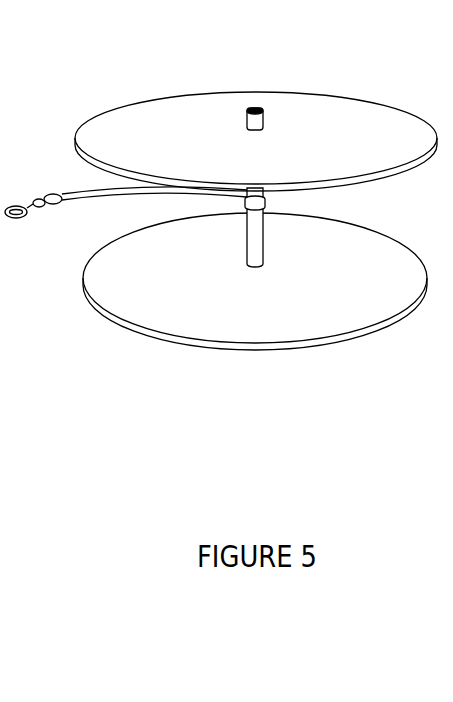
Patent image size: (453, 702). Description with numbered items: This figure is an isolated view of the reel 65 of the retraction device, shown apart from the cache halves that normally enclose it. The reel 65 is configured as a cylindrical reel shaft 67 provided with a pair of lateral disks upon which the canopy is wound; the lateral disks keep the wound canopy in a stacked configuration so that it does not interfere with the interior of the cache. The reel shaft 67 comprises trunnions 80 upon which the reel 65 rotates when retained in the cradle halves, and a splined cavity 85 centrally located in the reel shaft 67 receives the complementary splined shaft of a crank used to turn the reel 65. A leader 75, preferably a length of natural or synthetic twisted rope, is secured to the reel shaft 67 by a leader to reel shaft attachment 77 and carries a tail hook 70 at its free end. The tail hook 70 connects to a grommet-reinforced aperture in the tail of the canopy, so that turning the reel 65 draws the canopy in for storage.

The reel 65 is at (362, 326).
The reel shaft 67 is at (258, 258).
The leader to reel shaft attachment 77 is at (266, 204).
The leader 75 is at (60, 196).
The tail hook 70 is at (14, 218).
The trunnions 80 is at (262, 118).
The splined cavity 85 is at (253, 107).